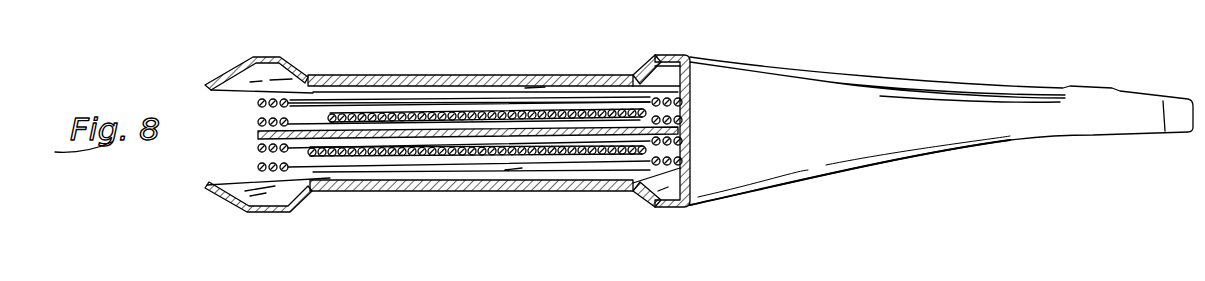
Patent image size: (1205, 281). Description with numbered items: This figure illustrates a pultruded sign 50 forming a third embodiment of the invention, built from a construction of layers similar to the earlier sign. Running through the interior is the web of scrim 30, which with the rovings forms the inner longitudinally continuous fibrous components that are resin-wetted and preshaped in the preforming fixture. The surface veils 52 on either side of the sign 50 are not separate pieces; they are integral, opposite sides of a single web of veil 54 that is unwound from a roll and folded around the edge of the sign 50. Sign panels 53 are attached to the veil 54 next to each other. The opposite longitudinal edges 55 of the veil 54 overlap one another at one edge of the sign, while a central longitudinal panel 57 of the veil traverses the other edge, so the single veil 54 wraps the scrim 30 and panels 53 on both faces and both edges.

The web of scrim 30 is at (258, 133).
The sign 50 is at (1081, 80).
The surface veils 52 is at (444, 76).
The sign panels 53 is at (578, 56).
The web of veil 54 is at (271, 53).
The opposite longitudinal edges 55 is at (251, 92).
The central longitudinal panel 57 is at (697, 92).